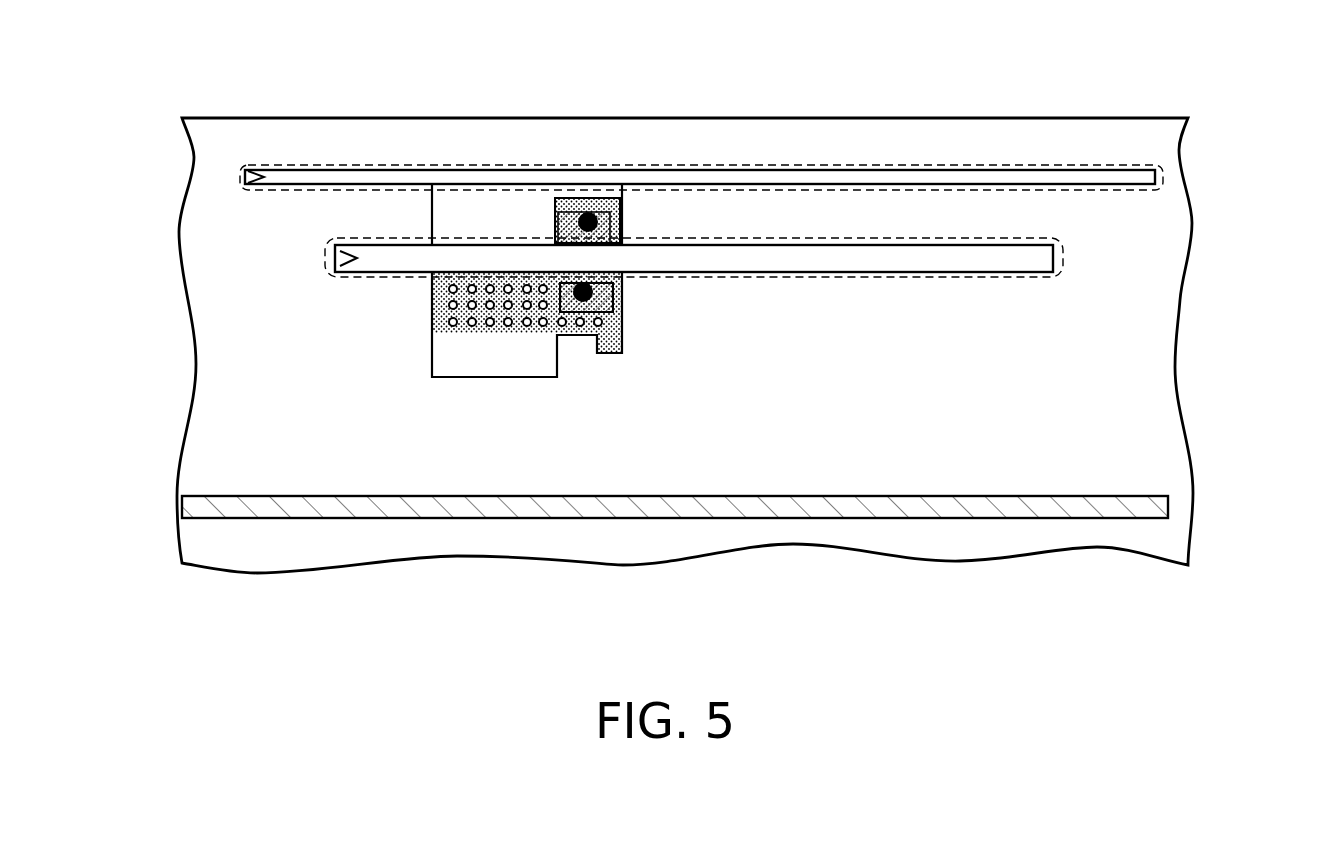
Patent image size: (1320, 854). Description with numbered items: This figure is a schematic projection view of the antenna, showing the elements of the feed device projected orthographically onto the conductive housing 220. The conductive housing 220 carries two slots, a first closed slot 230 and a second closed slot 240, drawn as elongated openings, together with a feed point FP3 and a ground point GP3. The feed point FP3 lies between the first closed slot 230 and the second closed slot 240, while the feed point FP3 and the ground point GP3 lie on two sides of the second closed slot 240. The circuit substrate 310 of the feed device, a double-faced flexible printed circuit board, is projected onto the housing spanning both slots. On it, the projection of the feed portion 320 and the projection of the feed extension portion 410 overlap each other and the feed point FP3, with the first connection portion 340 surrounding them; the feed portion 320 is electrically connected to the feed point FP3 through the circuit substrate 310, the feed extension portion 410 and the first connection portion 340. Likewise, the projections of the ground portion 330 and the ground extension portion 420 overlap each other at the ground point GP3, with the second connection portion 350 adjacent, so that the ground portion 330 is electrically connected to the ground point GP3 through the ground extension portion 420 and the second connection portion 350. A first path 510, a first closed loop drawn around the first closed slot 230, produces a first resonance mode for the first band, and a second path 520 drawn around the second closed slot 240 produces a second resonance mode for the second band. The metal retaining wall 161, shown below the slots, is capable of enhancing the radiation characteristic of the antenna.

The metal retaining wall 161 is at (210, 511).
The conductive housing 220 is at (239, 434).
The first closed slot 230 is at (247, 177).
The second closed slot 240 is at (335, 252).
The circuit substrate 310 is at (403, 280).
The feed portion 320 is at (645, 147).
The feed extension portion 410 is at (645, 147).
The ground portion 330 is at (614, 184).
The ground extension portion 420 is at (614, 184).
The first connection portion 340 is at (645, 147).
The second connection portion 350 is at (603, 313).
The first path 510 is at (684, 183).
The second path 520 is at (684, 263).
The ground point GP3 is at (583, 288).
The feed point FP3 is at (588, 215).